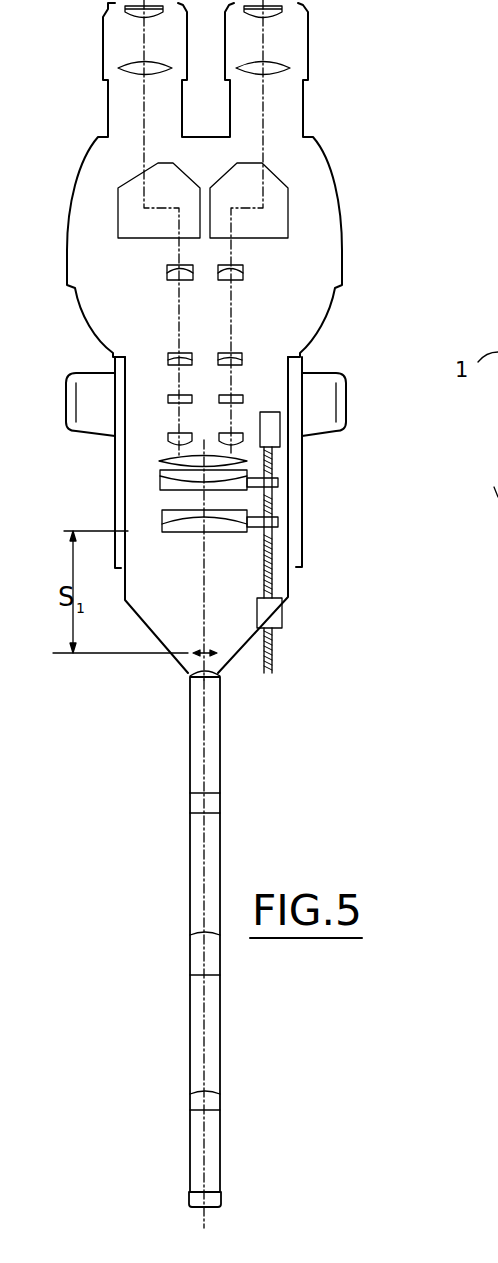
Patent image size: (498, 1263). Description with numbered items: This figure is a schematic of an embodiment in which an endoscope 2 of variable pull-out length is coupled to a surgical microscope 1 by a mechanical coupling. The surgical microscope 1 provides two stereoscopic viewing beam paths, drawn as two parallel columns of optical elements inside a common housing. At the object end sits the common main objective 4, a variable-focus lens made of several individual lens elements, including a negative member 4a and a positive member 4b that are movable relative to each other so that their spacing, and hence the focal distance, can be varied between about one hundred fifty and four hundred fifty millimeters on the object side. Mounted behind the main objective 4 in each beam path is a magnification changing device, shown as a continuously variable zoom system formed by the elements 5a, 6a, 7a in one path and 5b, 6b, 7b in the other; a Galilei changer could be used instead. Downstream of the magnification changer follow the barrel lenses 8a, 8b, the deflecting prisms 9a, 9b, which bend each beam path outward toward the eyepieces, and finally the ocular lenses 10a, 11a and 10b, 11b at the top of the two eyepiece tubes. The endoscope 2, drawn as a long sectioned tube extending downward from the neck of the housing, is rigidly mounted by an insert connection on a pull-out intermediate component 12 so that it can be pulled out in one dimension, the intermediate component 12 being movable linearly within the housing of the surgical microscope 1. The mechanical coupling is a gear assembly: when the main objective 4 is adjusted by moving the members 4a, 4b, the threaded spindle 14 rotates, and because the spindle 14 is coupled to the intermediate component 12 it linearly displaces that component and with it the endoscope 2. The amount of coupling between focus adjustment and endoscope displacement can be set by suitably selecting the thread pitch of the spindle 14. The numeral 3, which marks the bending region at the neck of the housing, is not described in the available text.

The surgical microscope 1 is at (345, 323).
The endoscope 2 is at (165, 907).
The bending section 3 is at (211, 640).
The main objective 4 is at (66, 518).
The negative member 4a is at (163, 520).
The positive member 4b is at (160, 478).
The magnification changing device element 5a is at (243, 358).
The magnification changing device element 5b is at (168, 358).
The magnification changing device element 6a is at (243, 398).
The magnification changing device element 6b is at (168, 398).
The magnification changing device element 7a is at (242, 433).
The magnification changing device element 7b is at (168, 440).
The barrel lens 8a is at (243, 271).
The barrel lens 8b is at (166, 276).
The deflecting prism 9a is at (272, 212).
The deflecting prism 9b is at (130, 210).
The ocular lens 10a is at (278, 70).
The ocular lens 10b is at (137, 66).
The ocular lens 11a is at (268, 13).
The ocular lens 11b is at (143, 13).
The intermediate component 12 is at (280, 583).
The threaded spindle 14 is at (273, 648).